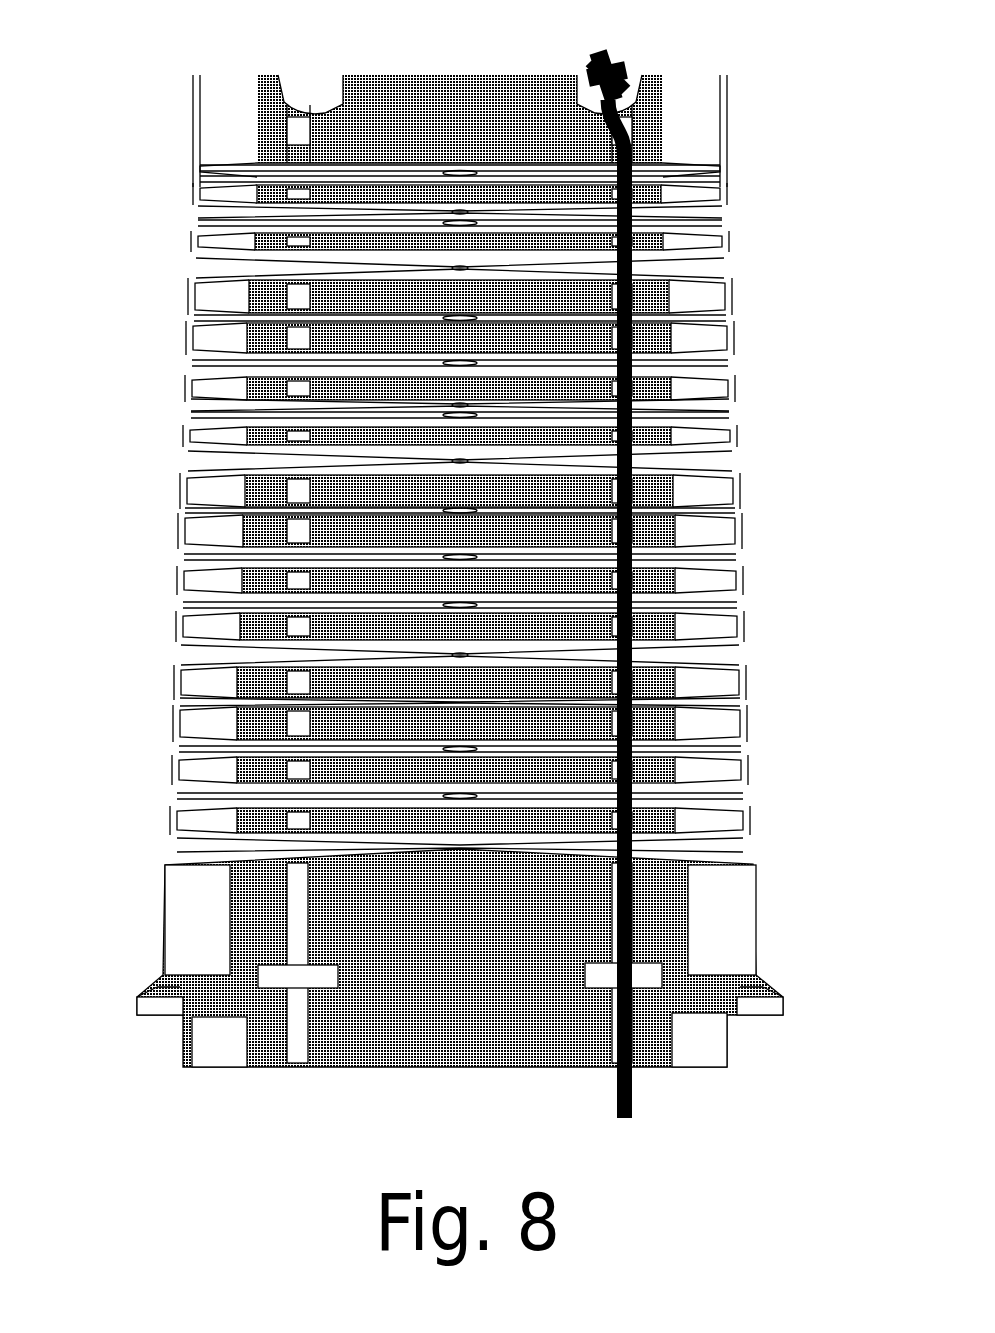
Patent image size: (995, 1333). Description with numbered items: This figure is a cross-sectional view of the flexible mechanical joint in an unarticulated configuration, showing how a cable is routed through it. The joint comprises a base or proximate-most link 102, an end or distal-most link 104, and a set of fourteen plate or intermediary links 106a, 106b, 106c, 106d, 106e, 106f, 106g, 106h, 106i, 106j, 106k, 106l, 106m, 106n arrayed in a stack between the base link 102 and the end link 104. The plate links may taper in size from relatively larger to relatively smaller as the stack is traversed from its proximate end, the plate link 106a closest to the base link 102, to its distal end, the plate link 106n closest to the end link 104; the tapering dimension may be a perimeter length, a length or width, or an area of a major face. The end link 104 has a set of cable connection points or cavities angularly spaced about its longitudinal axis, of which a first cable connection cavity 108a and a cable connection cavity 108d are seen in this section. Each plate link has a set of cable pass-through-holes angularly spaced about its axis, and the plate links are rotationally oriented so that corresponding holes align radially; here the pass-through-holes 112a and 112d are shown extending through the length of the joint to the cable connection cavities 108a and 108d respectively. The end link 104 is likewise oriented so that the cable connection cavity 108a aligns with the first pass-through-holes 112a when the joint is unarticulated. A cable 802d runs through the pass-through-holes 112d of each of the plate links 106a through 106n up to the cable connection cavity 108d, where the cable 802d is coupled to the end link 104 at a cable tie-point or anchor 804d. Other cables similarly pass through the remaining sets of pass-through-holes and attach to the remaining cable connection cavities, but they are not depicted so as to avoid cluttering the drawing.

The base or proximate-most link 102 is at (773, 1005).
The end or distal-most link 104 is at (712, 128).
The plate or intermediary link 106a is at (750, 815).
The plate or intermediary link 106b is at (170, 757).
The plate or intermediary link 106c is at (748, 722).
The plate or intermediary link 106d is at (177, 677).
The plate or intermediary link 106e is at (748, 625).
The plate or intermediary link 106f is at (182, 572).
The plate or intermediary link 106g is at (745, 532).
The plate or intermediary link 106h is at (185, 487).
The plate or intermediary link 106i is at (735, 435).
The plate or intermediary link 106j is at (195, 378).
The plate or intermediary link 106k is at (733, 345).
The plate or intermediary link 106l is at (203, 297).
The plate or intermediary link 106m is at (725, 240).
The plate or intermediary link 106n is at (205, 192).
The cable connection point or cavity 108a is at (305, 92).
The cable connection point or cavity 108d is at (583, 83).
The cable pass-through-hole 112a is at (292, 130).
The cable pass-through-hole 112d is at (634, 152).
The cable 802d is at (640, 1115).
The cable tie-point or anchor 804d is at (620, 63).